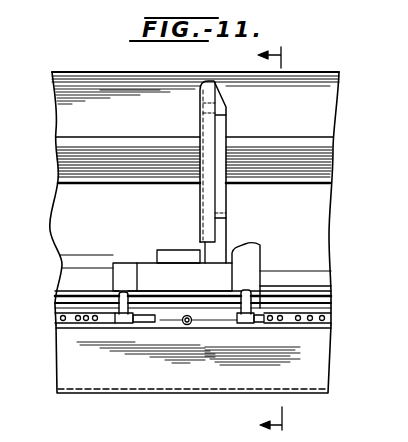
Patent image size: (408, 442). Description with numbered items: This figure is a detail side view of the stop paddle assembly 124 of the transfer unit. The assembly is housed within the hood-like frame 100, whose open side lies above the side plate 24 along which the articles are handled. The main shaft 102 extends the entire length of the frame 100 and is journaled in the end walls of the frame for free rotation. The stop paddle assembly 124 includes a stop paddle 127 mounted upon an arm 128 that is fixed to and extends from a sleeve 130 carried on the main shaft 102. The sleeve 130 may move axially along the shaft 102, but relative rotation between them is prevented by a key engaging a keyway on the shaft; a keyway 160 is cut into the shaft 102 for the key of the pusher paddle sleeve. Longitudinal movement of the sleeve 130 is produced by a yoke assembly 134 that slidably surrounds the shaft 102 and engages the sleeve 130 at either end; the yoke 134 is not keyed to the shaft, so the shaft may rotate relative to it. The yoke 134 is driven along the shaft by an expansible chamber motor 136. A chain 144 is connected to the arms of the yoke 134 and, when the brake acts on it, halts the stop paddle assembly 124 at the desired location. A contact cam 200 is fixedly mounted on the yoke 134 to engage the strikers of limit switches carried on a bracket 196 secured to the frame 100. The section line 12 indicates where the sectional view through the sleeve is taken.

The section line 12 is at (280, 240).
The side plate 24 is at (98, 380).
The frame 100 is at (89, 74).
The main shaft 102 is at (299, 273).
The stop paddle assembly 124 is at (271, 221).
The stop paddle 127 is at (200, 127).
The arm 128 is at (225, 241).
The sleeve 130 is at (195, 290).
The yoke assembly 134 is at (128, 262).
The expansible chamber motor 136 is at (72, 255).
The chain 144 is at (61, 318).
The keyway 160 is at (327, 301).
The bracket 196 is at (104, 143).
The contact cam 200 is at (254, 248).